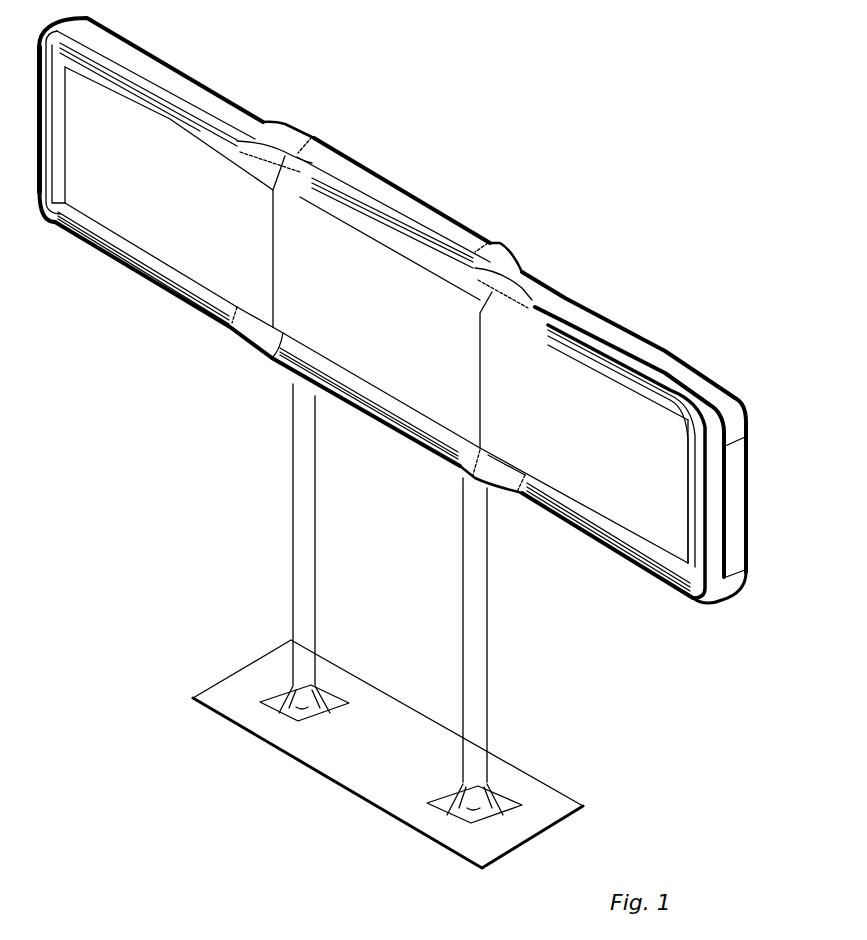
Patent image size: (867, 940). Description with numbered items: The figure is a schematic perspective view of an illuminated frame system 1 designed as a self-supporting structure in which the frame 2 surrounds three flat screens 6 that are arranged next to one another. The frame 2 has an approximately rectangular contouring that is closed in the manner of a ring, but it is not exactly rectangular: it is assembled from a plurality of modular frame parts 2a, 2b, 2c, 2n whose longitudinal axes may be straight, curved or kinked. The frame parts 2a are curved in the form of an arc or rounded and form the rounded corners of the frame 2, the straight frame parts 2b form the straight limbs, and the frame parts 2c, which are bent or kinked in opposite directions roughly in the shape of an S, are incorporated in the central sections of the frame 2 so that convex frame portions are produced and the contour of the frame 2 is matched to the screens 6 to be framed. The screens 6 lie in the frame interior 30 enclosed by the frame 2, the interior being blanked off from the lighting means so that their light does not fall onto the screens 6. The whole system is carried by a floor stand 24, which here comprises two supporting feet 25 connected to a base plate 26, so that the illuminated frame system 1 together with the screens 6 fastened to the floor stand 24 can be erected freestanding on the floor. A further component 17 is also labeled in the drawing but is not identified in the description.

The illuminated frame system 1 is at (609, 312).
The frame 2 is at (642, 366).
The frame part 2a is at (733, 413).
The straight frame part 2b is at (575, 317).
The frame part 2c is at (518, 275).
The frame part 2n is at (737, 525).
The screen 6 is at (158, 241).
The frame interior 30 is at (378, 368).
The third sign panel 17 is at (648, 525).
The floor stand 24 is at (486, 668).
The supporting feet 25 is at (293, 572).
The base plate 26 is at (323, 770).